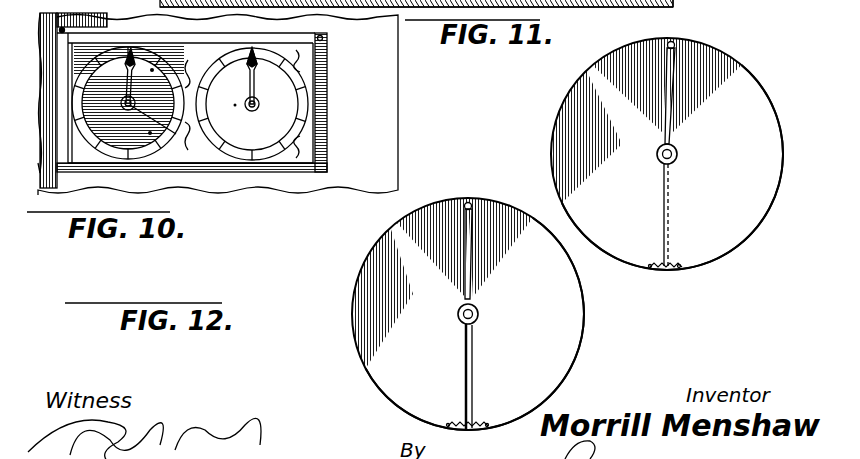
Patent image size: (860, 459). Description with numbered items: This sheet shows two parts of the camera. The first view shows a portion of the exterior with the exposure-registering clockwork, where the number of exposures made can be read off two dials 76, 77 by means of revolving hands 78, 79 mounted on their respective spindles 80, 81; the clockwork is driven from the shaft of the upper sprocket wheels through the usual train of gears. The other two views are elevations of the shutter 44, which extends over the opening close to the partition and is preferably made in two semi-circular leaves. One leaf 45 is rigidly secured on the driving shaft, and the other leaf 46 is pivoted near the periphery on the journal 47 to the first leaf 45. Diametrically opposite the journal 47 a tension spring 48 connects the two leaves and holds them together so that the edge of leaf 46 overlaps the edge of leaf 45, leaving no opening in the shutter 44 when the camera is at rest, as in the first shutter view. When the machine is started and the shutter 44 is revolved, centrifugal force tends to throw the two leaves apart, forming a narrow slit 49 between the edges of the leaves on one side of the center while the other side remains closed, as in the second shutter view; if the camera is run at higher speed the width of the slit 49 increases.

In FIG. 11, the shutter 44 is at (738, 49).
In FIG. 12, the shutter 44 is at (383, 233).
In FIG. 11, the first leaf 45 is at (583, 90).
In FIG. 12, the first leaf 45 is at (433, 205).
In FIG. 11, the second leaf 46 is at (750, 86).
In FIG. 12, the second leaf 46 is at (567, 325).
In FIG. 11, the journal 47 is at (674, 43).
In FIG. 12, the journal 47 is at (471, 204).
In FIG. 11, the tension spring 48 is at (668, 264).
In FIG. 12, the tension spring 48 is at (481, 421).
In FIG. 12, the slit 49 is at (473, 374).
In FIG. 10, the dial 76 is at (288, 136).
In FIG. 10, the dial 77 is at (170, 80).
In FIG. 10, the revolving hand 78 is at (256, 92).
In FIG. 10, the revolving hand 79 is at (165, 128).
In FIG. 10, the spindle 80 is at (260, 105).
In FIG. 10, the spindle 81 is at (130, 107).